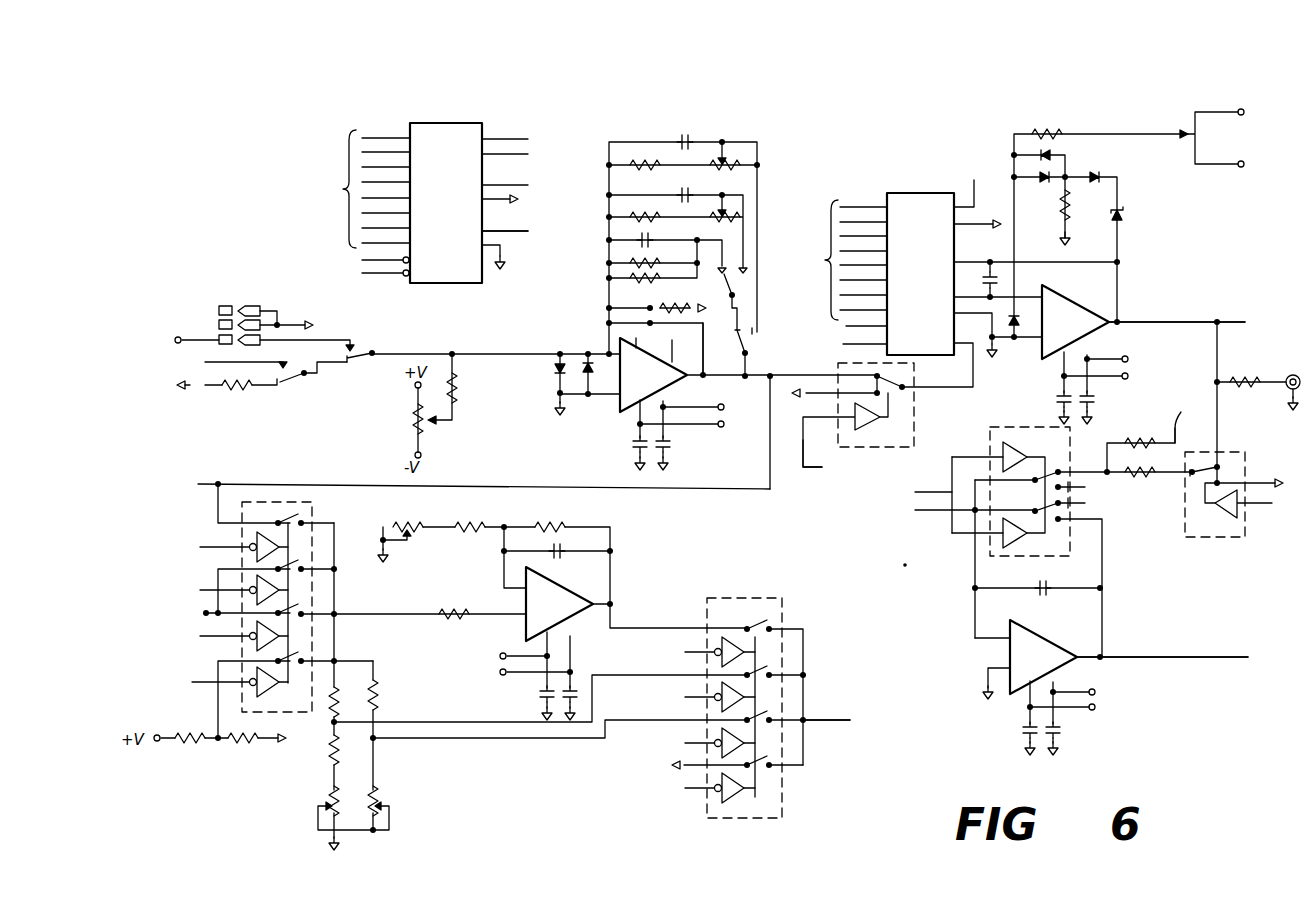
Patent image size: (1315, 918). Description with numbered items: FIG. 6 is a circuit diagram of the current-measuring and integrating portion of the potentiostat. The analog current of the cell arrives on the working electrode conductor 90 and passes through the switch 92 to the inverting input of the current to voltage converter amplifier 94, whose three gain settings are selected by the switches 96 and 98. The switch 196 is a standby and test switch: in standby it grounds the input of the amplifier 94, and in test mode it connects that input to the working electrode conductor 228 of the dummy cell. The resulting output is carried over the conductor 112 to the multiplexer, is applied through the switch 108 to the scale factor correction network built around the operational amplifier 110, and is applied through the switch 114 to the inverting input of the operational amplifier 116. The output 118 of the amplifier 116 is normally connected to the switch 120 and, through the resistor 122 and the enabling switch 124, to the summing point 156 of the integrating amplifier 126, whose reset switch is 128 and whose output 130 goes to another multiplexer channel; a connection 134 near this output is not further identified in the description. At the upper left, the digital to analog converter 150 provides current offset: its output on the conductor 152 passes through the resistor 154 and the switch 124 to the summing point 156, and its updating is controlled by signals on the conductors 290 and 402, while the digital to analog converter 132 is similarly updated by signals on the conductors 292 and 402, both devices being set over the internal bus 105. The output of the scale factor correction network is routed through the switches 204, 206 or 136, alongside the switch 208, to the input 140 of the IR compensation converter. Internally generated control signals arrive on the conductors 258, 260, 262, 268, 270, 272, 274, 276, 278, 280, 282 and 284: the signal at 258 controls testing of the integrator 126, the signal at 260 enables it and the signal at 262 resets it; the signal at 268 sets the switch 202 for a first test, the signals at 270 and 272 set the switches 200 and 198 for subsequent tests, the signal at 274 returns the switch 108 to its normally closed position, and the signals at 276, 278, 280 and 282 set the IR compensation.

The digital to analog converter 150 is at (473, 123).
The internal bus 105 is at (592, 225).
The conductor 290 is at (362, 261).
The conductor 402 is at (362, 274).
The conductor 152 is at (522, 232).
The working electrode conductor 90 is at (320, 340).
The working electrode conductor 228 is at (207, 362).
The switch 92 is at (373, 357).
The switch 196 is at (285, 382).
The conductor 112 is at (493, 488).
The switch 96 is at (736, 292).
The switch 98 is at (750, 352).
The current to voltage converter amplifier 94 is at (617, 404).
The digital to analog converter 132 is at (908, 193).
The conductor 292 is at (846, 326).
The operational amplifier 116 is at (1040, 360).
The output 118 is at (1142, 322).
The output connector 134 is at (1233, 322).
The switch 114 is at (901, 393).
The conductor 284 is at (811, 469).
The conductor 260 is at (934, 491).
The conductor 262 is at (938, 511).
The switch 124 is at (1050, 478).
The switch 128 is at (1048, 506).
The resistor 154 is at (1146, 441).
The switch 120 is at (1201, 466).
The resistor 122 is at (1149, 480).
The conductor 258 is at (1265, 505).
The summing point 156 is at (974, 588).
The integrating amplifier 126 is at (1006, 650).
The output 130 is at (1163, 657).
The switch 108 is at (300, 517).
The conductor 274 is at (212, 545).
The switch 198 is at (300, 563).
The conductor 272 is at (215, 590).
The switch 200 is at (300, 607).
The conductor 270 is at (198, 636).
The switch 202 is at (300, 653).
The conductor 268 is at (198, 682).
The operational amplifier 110 is at (522, 604).
The switch 136 is at (760, 621).
The conductor 282 is at (686, 651).
The switch 204 is at (772, 668).
The conductor 280 is at (686, 697).
The switch 206 is at (772, 713).
The conductor 278 is at (686, 743).
The input 140 is at (840, 719).
The switch 208 is at (772, 758).
The conductor 276 is at (688, 789).